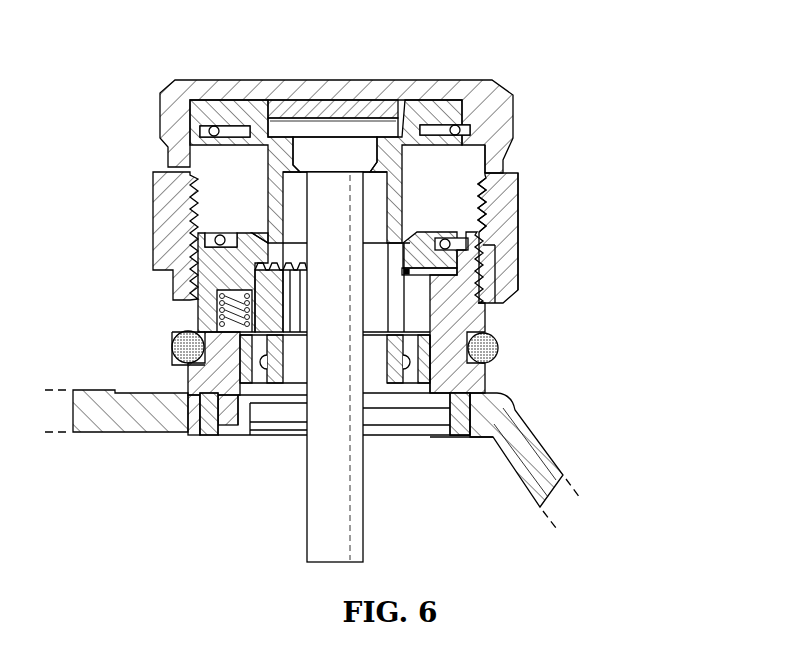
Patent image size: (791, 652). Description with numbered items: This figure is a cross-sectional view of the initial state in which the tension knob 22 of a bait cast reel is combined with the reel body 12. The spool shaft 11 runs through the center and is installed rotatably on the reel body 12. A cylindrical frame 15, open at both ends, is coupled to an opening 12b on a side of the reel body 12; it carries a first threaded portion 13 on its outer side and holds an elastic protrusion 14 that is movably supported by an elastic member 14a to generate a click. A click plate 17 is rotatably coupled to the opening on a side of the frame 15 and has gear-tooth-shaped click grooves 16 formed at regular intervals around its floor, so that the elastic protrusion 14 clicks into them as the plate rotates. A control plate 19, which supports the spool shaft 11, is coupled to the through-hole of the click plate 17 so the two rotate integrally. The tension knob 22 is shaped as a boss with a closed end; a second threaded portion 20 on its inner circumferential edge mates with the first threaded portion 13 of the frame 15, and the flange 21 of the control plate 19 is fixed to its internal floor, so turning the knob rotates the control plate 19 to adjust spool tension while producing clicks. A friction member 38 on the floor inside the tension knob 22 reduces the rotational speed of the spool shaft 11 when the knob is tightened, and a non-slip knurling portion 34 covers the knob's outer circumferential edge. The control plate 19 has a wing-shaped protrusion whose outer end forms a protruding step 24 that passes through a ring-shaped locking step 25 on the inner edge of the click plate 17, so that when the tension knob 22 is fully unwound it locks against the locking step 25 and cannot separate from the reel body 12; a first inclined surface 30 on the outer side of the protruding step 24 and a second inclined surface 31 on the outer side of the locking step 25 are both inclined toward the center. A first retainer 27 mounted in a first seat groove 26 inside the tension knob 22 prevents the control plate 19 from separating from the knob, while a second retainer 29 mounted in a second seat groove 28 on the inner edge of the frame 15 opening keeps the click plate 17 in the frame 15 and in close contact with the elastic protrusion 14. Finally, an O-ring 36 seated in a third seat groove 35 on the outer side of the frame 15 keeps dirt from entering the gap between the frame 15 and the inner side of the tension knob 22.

The spool shaft 11 is at (320, 540).
The reel body 12 is at (553, 452).
The opening 12b is at (468, 437).
The first threaded portion 13 is at (480, 308).
The elastic protrusion 14 is at (240, 280).
The elastic member 14a is at (174, 333).
The cylindrical frame 15 is at (200, 420).
The click grooves 16 is at (290, 272).
The click plate 17 is at (222, 232).
The control plate 19 is at (284, 120).
The second threaded portion 20 is at (485, 185).
The flange 21 is at (425, 110).
The tension knob 22 is at (522, 112).
The protruding step 24 is at (252, 218).
The locking step 25 is at (488, 282).
The first seat groove 26 is at (490, 136).
The first retainer 27 is at (455, 125).
The second seat groove 28 is at (212, 240).
The second retainer 29 is at (240, 240).
The first inclined surface 30 is at (470, 252).
The second inclined surface 31 is at (410, 230).
The non-slip knurling portion 34 is at (518, 190).
The third seat groove 35 is at (188, 347).
The O-ring 36 is at (483, 348).
The friction member 38 is at (333, 110).